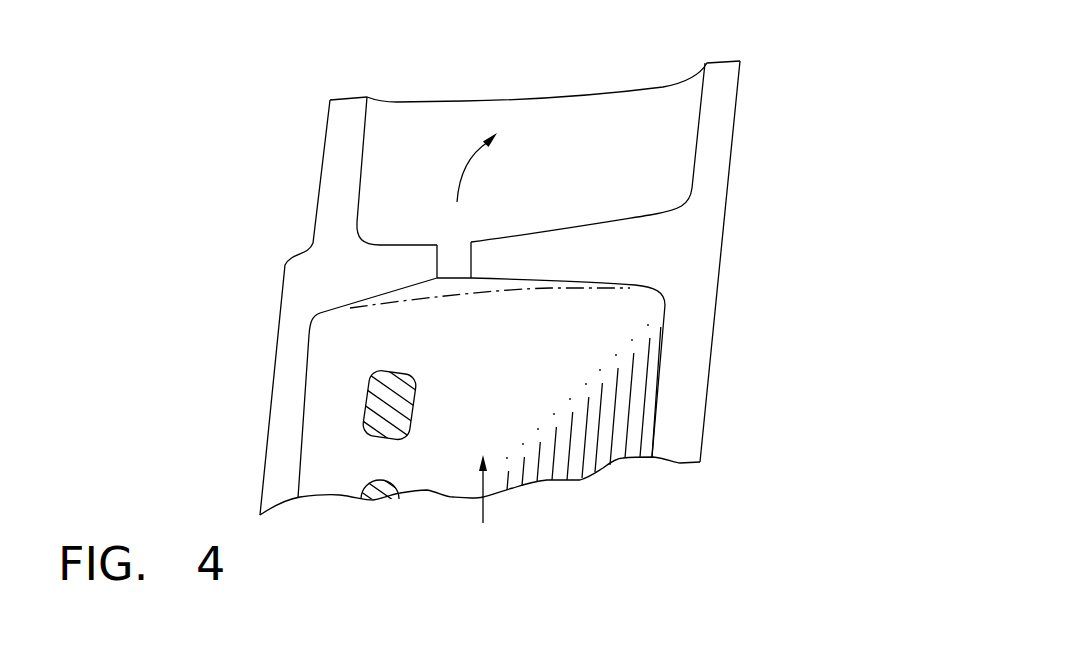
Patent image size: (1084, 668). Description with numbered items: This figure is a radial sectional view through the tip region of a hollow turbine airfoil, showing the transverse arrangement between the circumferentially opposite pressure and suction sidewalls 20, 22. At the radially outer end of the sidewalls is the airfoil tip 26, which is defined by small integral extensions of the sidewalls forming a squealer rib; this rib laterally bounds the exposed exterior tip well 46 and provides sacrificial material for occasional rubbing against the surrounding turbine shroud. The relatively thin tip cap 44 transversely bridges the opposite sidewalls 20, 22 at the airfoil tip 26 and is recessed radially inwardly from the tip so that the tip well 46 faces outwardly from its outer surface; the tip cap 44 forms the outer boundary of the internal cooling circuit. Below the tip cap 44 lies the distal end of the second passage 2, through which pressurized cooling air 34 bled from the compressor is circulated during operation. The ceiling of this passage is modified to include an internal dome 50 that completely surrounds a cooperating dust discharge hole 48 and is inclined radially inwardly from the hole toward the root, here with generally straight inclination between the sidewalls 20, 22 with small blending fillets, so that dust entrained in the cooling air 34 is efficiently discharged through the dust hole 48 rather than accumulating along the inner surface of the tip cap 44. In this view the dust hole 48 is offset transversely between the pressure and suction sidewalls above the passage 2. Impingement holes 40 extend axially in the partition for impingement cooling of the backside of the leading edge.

The pressure sidewall 20 is at (270, 383).
The suction sidewall 22 is at (713, 337).
The airfoil tip 26 is at (723, 55).
The tip cap 44 is at (573, 223).
The tip well 46 is at (425, 147).
The dust discharge hole 48 is at (467, 247).
The internal ceiling dome 50 is at (540, 281).
The impingement holes 40 is at (387, 443).
The second passage 2 is at (302, 463).
The cooling air 34 is at (485, 512).